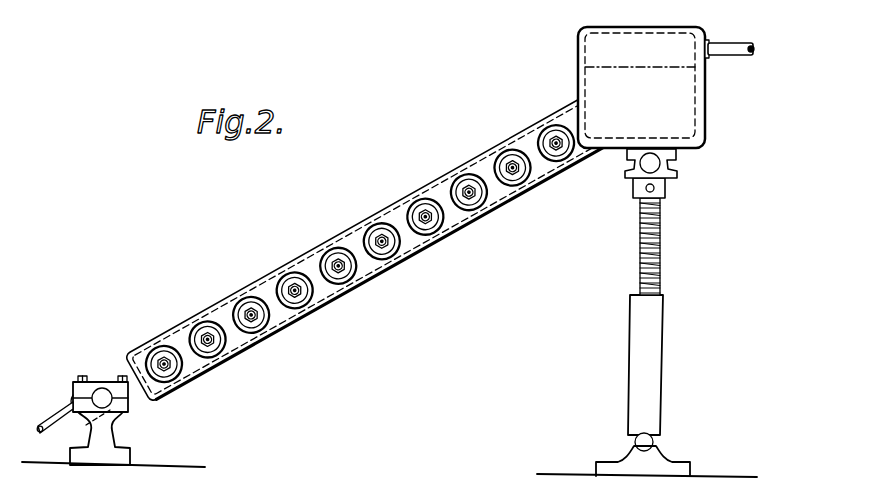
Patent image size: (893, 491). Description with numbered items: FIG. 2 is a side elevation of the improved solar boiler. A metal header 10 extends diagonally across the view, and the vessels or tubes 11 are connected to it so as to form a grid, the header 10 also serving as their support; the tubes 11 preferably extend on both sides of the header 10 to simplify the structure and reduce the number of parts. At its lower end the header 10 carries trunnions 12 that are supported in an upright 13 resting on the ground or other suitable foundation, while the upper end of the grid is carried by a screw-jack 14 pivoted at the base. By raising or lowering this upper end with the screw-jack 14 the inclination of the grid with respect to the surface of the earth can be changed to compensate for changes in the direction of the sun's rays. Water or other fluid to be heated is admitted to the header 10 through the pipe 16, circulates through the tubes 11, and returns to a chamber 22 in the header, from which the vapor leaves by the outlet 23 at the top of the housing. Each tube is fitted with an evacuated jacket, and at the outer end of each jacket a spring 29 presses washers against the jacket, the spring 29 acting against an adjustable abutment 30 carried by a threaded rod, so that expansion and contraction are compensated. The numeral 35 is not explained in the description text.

The header 10 is at (320, 246).
The tubes 11 is at (393, 253).
The trunnions 12 is at (93, 378).
The upright 13 is at (110, 432).
The screw-jack 14 is at (655, 333).
The pipe 16 is at (52, 418).
The chamber 22 is at (686, 117).
The outlet 23 is at (733, 48).
The spring 29 is at (221, 9).
The adjustable abutment 30 is at (251, 302).
The part 35 is at (146, 4).